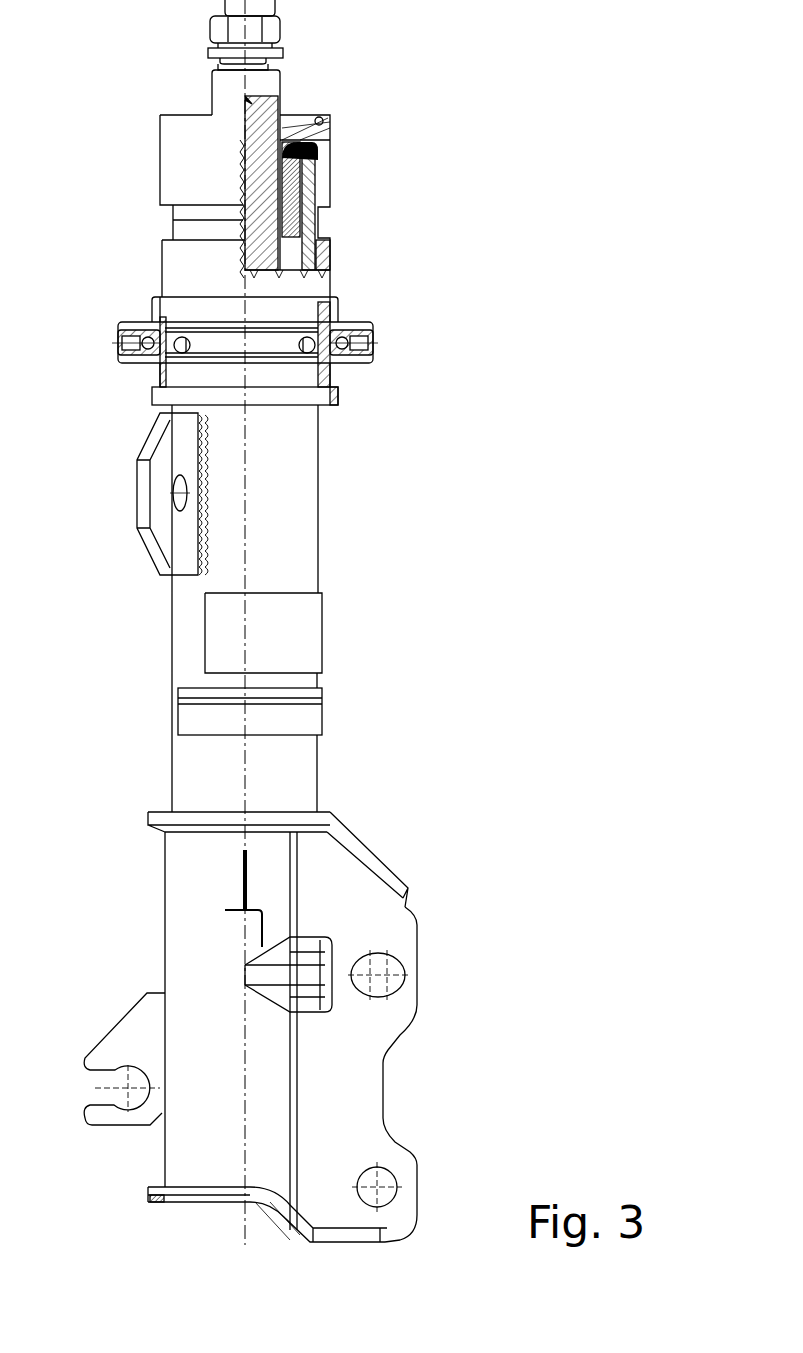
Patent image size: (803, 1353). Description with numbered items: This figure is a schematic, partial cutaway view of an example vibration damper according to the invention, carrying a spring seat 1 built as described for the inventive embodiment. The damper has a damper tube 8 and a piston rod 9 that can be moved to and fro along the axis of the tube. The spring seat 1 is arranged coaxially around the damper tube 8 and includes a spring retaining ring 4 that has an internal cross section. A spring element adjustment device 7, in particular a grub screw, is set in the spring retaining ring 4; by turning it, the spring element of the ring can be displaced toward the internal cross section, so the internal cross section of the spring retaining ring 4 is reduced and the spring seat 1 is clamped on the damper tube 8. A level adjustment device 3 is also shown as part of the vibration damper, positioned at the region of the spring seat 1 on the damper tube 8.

The spring seat 1 is at (295, 311).
The level adjustment device 3 is at (143, 373).
The spring retaining ring 4 is at (345, 310).
The spring element adjustment device 7 is at (147, 343).
The damper tube 8 is at (320, 773).
The piston rod 9 is at (258, 84).